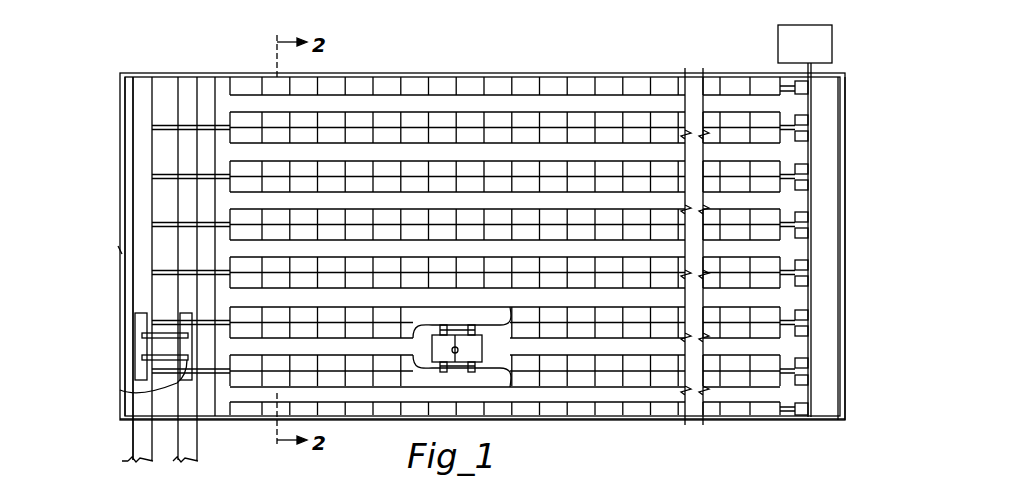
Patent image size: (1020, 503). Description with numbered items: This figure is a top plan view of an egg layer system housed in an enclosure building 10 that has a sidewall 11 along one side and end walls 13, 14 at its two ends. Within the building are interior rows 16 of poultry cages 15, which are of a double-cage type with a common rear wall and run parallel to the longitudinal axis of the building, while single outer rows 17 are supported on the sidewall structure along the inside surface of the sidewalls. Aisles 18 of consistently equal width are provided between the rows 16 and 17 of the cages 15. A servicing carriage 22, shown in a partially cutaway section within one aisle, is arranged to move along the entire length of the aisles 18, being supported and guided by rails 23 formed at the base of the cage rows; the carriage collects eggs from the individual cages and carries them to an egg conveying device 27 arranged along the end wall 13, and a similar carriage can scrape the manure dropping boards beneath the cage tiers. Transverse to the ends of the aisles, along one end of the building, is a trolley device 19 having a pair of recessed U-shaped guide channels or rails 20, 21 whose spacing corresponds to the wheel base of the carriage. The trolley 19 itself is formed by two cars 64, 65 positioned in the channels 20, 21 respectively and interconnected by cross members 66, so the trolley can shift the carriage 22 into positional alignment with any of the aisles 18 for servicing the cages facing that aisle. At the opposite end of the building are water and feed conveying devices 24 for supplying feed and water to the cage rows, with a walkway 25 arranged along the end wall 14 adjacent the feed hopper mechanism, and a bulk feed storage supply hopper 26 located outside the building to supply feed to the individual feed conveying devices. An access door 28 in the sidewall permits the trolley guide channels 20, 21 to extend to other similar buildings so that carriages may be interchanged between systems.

The enclosure building 10 is at (104, 90).
The sidewall 11 is at (503, 76).
The end wall 13 is at (122, 138).
The end wall 14 is at (848, 272).
The poultry cages 15 is at (640, 120).
The interior rows 16 is at (328, 140).
The outer rows 17 is at (553, 86).
The aisles 18 is at (440, 103).
The trolley device 19 is at (138, 386).
The guide channel 20 is at (140, 258).
The guide channel 21 is at (186, 158).
The servicing carriage 22 is at (482, 352).
The rails 23 is at (215, 238).
The water and feed conveying devices 24 is at (805, 140).
The walkway 25 is at (840, 235).
The bulk feed storage supply hopper 26 is at (790, 45).
The egg conveying device 27 is at (118, 250).
The access door 28 is at (160, 418).
The car 64 is at (183, 312).
The car 65 is at (178, 297).
The cross members 66 is at (138, 352).